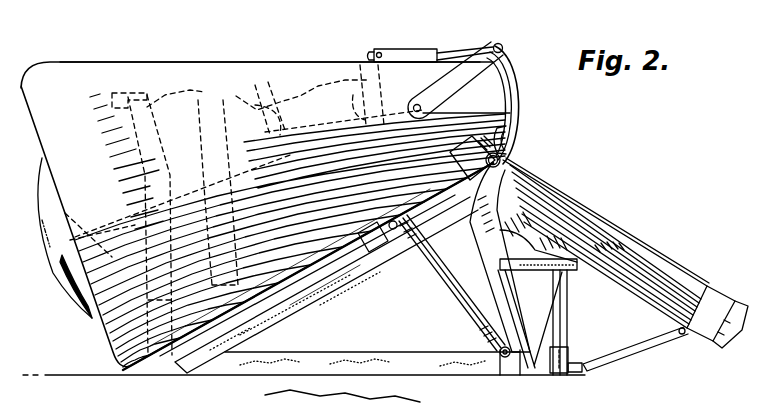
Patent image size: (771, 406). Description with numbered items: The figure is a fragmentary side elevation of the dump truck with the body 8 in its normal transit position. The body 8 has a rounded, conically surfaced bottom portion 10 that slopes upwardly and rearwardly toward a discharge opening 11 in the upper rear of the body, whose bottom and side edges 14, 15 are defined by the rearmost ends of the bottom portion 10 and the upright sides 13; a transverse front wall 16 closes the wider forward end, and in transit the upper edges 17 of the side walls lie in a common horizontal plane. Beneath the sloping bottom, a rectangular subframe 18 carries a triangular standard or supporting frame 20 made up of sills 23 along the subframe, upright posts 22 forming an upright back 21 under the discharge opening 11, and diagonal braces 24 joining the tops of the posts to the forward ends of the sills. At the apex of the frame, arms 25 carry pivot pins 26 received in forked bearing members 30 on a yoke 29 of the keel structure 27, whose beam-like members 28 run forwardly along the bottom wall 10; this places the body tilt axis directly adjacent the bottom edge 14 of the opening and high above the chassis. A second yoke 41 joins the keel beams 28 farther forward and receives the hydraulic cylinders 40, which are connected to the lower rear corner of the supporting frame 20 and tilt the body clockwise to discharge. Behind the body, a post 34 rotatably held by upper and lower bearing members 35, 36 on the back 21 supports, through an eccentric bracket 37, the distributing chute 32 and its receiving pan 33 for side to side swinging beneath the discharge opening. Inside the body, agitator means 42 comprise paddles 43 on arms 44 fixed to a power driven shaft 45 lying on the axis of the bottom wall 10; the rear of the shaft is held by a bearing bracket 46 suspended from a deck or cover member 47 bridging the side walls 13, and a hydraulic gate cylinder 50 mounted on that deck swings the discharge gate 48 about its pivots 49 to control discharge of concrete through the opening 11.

The body 8 is at (248, 56).
The bottom portion 10 is at (260, 298).
The discharge opening 11 is at (510, 130).
The side walls 13 is at (261, 63).
The bottom edge 14 is at (508, 145).
The side edges 15 is at (513, 118).
The front wall 16 is at (93, 326).
The upper edges 17 is at (158, 62).
The subframe 18 is at (88, 375).
The supporting frame 20 is at (395, 297).
The upright back 21 is at (507, 297).
The upright posts 22 is at (504, 313).
The sills 23 is at (408, 364).
The diagonal braces 24 is at (336, 283).
The arms 25 is at (471, 228).
The pivot pin 26 is at (502, 162).
The keel structure 27 is at (348, 252).
The beam-like members 28 is at (302, 255).
The yoke 29 is at (472, 158).
The forked bearing members 30 is at (307, 275).
The distributing chute 32 is at (628, 208).
The receiving pan 33 is at (545, 190).
The post 34 is at (567, 318).
The upper bearing member 35 is at (577, 270).
The lower bearing member 36 is at (572, 350).
The bracket 37 is at (520, 237).
The hydraulic cylinders 40 is at (458, 293).
The second yoke 41 is at (376, 248).
The agitator means 42 is at (288, 96).
The paddles 43 is at (364, 81).
The arms 44 is at (160, 162).
The power driven shaft 45 is at (227, 180).
The bearing bracket 46 is at (515, 68).
The deck 47 is at (451, 62).
The discharge gate 48 is at (518, 98).
The pivots 49 is at (416, 104).
The hydraulic gate cylinder 50 is at (421, 50).